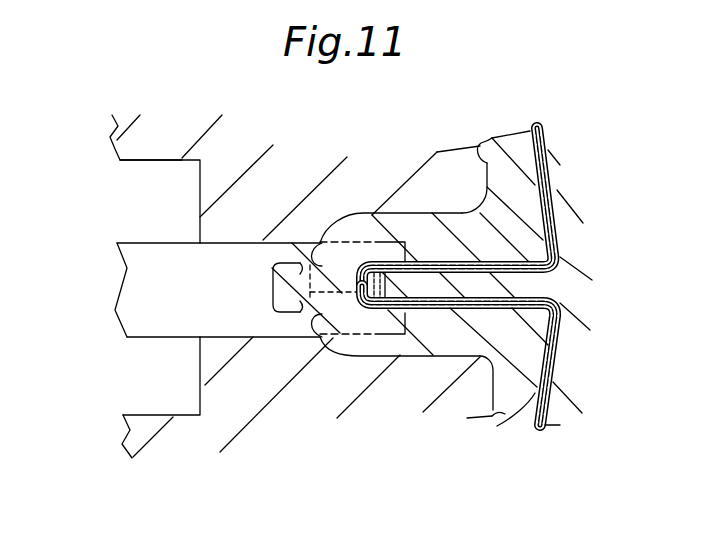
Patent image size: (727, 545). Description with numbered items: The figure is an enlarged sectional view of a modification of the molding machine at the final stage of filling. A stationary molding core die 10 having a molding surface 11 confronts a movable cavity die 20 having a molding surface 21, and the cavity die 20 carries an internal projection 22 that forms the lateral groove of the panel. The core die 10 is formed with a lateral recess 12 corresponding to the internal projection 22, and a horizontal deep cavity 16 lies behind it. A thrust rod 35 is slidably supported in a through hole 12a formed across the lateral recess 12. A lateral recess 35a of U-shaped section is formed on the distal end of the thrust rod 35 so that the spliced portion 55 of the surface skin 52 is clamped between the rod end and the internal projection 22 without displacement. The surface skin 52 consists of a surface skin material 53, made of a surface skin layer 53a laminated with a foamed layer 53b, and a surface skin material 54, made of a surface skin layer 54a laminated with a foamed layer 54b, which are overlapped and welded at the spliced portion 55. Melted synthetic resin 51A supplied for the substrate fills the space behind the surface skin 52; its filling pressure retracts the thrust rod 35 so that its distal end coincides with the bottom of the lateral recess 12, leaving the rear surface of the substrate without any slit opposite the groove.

The molding core die 10 is at (280, 190).
The horizontal deep cavity 16 is at (150, 160).
The lateral recess 12 is at (364, 213).
The through hole 12a is at (172, 337).
The molding surface 11 is at (483, 138).
The thrust rod 35 is at (140, 266).
The lateral recess 35a is at (273, 273).
The spliced portion 55 is at (274, 292).
The surface skin material 53 is at (541, 131).
The surface skin layer 53a is at (552, 182).
The foamed layer 53b is at (522, 139).
The surface skin material 54 is at (560, 357).
The surface skin layer 54a is at (556, 384).
The foamed layer 54b is at (508, 415).
The cavity die 20 is at (570, 228).
The molding surface 21 is at (527, 398).
The internal projection 22 is at (507, 284).
The melted synthetic resin 51A is at (350, 356).
The surface skin 52 is at (435, 309).